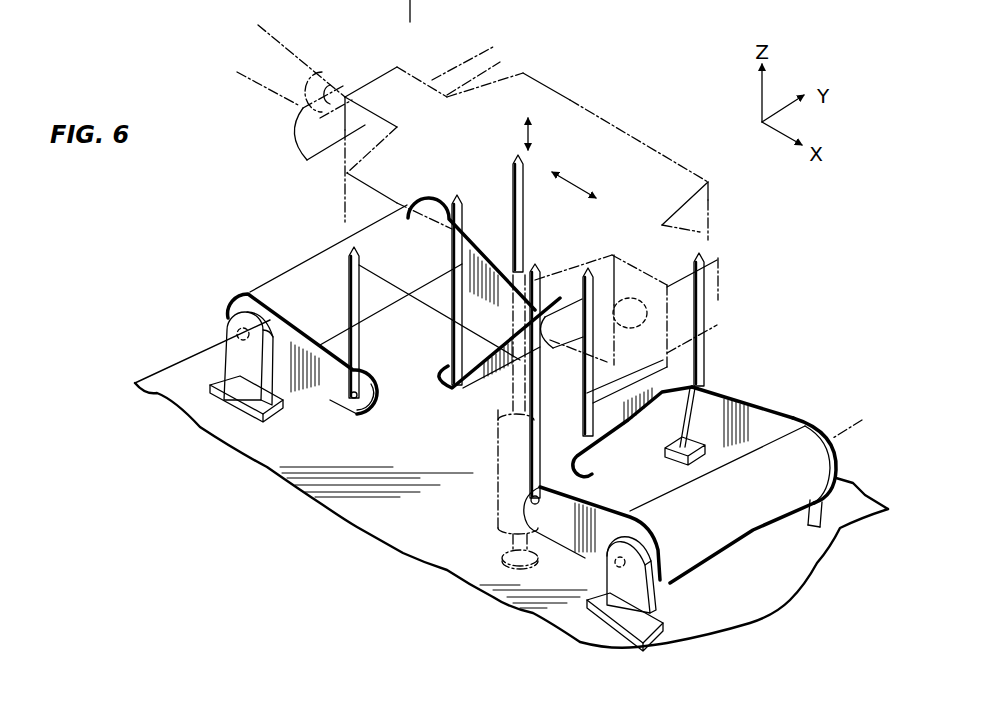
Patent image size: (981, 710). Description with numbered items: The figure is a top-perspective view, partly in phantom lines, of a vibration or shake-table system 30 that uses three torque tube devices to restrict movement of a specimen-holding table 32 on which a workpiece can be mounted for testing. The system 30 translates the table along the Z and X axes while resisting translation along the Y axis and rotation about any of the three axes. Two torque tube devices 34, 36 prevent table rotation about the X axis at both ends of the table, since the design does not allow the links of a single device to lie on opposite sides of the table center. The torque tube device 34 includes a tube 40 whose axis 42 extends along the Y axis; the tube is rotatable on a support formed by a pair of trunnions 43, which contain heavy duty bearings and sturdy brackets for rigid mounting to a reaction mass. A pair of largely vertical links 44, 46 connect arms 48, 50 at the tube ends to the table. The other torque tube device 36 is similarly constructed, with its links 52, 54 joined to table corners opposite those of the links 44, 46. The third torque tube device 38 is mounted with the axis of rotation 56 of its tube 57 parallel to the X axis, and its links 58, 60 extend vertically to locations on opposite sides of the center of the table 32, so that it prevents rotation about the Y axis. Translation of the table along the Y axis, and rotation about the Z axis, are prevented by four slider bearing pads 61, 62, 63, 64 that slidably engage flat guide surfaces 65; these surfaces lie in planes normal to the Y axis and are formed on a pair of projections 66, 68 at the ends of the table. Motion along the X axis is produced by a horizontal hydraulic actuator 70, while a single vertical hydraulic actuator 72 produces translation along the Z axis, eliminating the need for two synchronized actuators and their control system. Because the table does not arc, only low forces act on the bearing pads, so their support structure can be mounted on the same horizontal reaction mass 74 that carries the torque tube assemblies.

The vibration table system 30 is at (568, 84).
The specimen-holding table 32 is at (625, 133).
The torque tube device 34 is at (791, 416).
The torque tube device 36 is at (253, 290).
The torque tube device 38 is at (718, 380).
The tube 40 is at (707, 550).
The axis 42 is at (850, 421).
The trunnions 43 is at (808, 548).
The link 44 is at (530, 451).
The link 46 is at (705, 325).
The arm 48 is at (567, 527).
The arm 50 is at (752, 392).
The link 52 is at (359, 353).
The link 54 is at (524, 217).
The axis of rotation 56 is at (572, 340).
The tube 57 is at (633, 392).
The link 58 is at (452, 343).
The link 60 is at (583, 421).
The bearing pad 61 is at (300, 159).
The bearing pad 62 is at (455, 73).
The bearing pad 63 is at (605, 337).
The bearing pad 64 is at (737, 268).
The guide surfaces 65 is at (343, 167).
The projection 66 is at (378, 80).
The projection 68 is at (718, 300).
The horizontal hydraulic actuator 70 is at (262, 85).
The vertical hydraulic actuator 72 is at (498, 505).
The horizontal reaction mass 74 is at (170, 367).